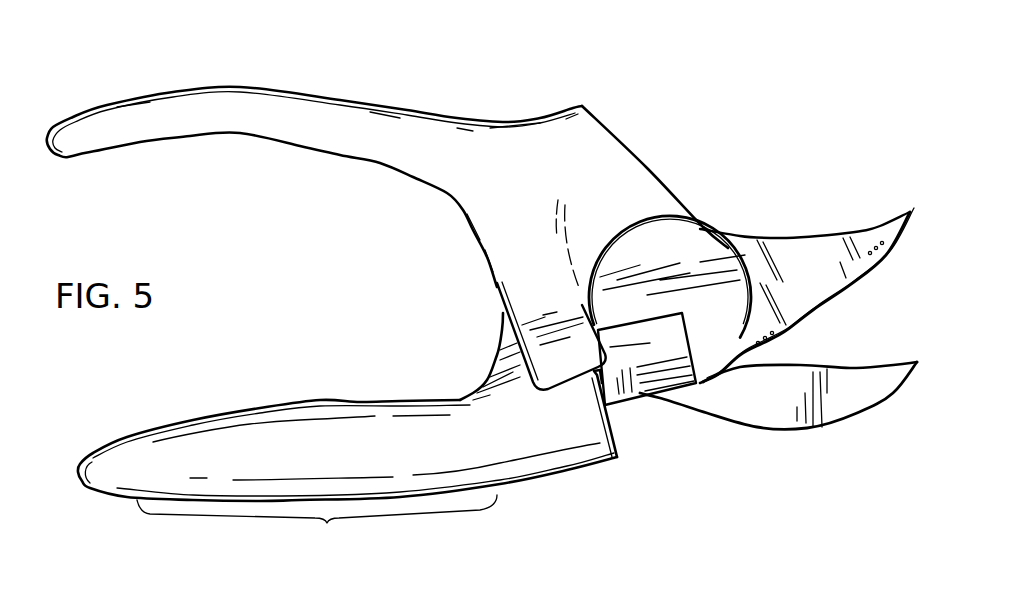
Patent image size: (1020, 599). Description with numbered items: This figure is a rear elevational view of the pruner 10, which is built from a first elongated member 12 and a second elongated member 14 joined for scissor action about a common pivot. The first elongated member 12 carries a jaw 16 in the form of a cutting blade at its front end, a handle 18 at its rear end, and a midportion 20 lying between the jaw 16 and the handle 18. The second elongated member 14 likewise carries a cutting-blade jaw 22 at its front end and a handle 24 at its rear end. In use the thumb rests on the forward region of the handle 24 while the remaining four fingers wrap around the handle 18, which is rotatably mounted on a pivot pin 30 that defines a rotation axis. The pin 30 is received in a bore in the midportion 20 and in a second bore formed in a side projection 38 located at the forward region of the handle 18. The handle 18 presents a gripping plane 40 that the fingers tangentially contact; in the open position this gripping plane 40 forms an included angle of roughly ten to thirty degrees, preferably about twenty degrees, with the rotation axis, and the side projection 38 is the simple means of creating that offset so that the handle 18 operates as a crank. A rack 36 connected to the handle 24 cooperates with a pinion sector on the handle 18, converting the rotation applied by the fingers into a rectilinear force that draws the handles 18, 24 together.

The pruner 10 is at (537, 108).
The first elongated member 12 is at (320, 386).
The second elongated member 14 is at (283, 81).
The jaw 16 is at (824, 250).
The handle 18 is at (190, 447).
The midportion 20 is at (723, 262).
The jaw 22 is at (843, 404).
The handle 24 is at (160, 113).
The pivot pin 30 is at (594, 382).
The rack 36 is at (543, 303).
The side projection 38 is at (493, 347).
The gripping plane 40 is at (317, 528).